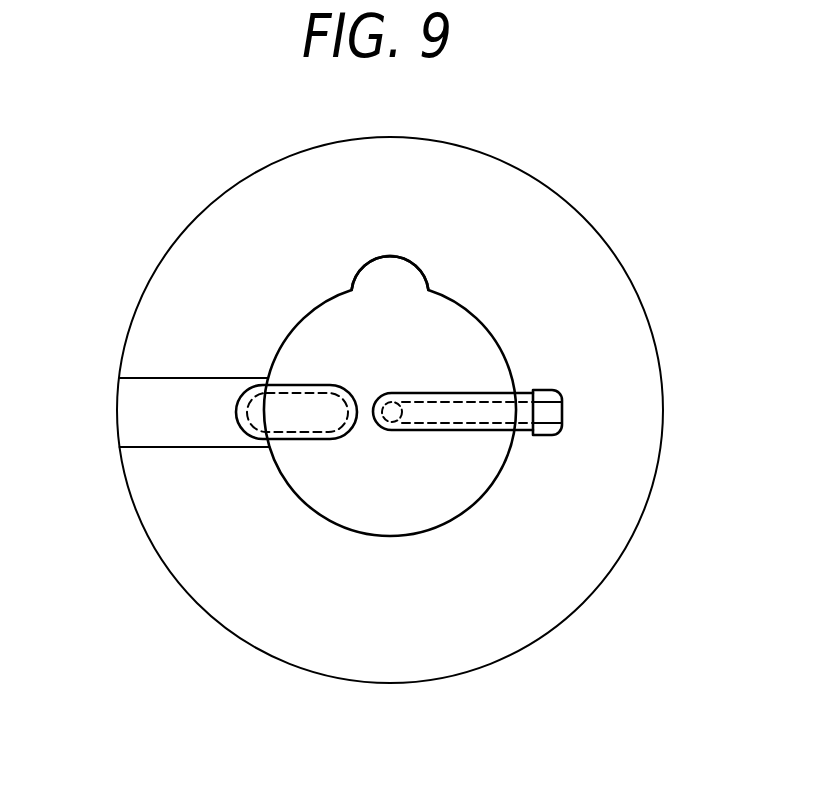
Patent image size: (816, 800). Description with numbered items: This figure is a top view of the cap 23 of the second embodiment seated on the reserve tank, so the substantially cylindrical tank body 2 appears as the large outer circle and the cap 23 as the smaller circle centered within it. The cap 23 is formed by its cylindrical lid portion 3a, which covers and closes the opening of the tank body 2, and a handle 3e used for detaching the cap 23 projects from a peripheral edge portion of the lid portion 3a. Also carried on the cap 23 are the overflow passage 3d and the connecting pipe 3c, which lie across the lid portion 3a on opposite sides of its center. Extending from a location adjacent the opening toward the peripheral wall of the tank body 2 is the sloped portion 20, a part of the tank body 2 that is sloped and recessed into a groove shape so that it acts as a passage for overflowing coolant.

The tank body 2 is at (608, 493).
The cap 23 is at (485, 320).
The handle 3e is at (403, 270).
The lid portion 3a is at (307, 340).
The sloped portion 20 is at (138, 413).
The overflow passage 3d is at (298, 442).
The connecting pipe 3c is at (465, 432).